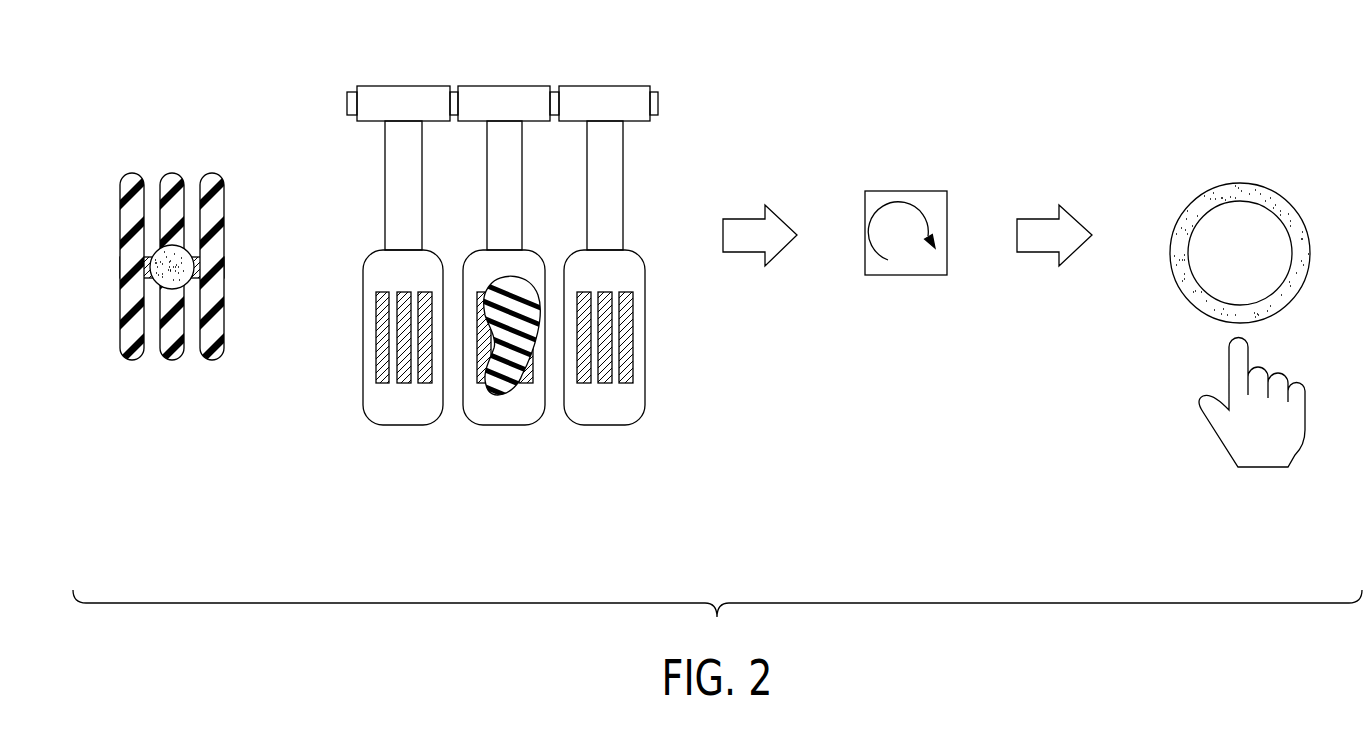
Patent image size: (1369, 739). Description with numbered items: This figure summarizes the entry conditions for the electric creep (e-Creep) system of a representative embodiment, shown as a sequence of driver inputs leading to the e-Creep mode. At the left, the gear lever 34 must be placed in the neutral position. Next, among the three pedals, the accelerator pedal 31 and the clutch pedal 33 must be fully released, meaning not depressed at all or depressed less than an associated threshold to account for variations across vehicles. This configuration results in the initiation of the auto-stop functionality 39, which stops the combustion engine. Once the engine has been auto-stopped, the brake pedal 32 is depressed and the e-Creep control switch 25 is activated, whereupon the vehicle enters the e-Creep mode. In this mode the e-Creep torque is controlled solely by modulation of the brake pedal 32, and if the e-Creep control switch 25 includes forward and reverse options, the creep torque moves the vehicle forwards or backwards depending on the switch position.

The e-Creep control switch 25 is at (1239, 146).
The accelerator pedal 31 is at (658, 228).
The brake pedal 32 is at (490, 458).
The clutch pedal 33 is at (352, 230).
The gear lever 34 is at (178, 152).
The auto-stop functionality 39 is at (916, 168).